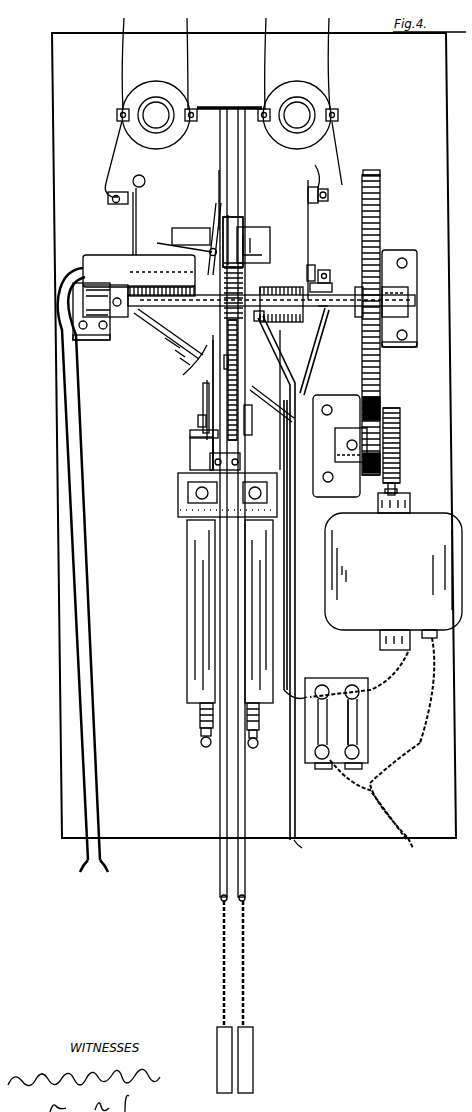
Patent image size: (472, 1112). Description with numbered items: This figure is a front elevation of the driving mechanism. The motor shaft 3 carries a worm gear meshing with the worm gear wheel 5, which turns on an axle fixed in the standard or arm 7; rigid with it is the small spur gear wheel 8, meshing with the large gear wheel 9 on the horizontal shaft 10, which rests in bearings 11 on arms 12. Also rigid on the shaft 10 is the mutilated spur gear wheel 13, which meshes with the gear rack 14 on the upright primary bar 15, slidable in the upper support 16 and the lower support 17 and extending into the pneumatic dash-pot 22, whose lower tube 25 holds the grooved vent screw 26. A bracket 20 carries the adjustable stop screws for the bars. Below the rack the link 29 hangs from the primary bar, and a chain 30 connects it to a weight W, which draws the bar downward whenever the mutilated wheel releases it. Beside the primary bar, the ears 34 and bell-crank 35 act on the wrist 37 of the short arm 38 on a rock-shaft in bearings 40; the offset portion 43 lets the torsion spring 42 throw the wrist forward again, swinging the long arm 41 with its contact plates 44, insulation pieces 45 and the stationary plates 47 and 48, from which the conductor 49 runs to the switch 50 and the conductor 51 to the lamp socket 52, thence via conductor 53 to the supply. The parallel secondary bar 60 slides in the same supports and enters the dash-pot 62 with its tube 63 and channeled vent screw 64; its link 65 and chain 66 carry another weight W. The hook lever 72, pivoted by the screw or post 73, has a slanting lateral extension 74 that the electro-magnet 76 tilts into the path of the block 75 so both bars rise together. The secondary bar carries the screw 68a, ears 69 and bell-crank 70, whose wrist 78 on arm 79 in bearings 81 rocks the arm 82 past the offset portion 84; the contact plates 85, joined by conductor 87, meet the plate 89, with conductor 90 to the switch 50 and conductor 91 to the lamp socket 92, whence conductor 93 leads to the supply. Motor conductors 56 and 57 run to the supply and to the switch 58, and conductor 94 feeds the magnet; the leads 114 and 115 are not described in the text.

The wire 114 is at (125, 60).
The wire 115 is at (188, 59).
The incandescent electric lamp socket 92 is at (163, 92).
The incandescent lamp socket 52 is at (302, 93).
The conductor 93 is at (221, 107).
The conductor 53 is at (241, 105).
The link 65 is at (219, 893).
The link 29 is at (246, 897).
The chain 66 is at (222, 960).
The chain 30 is at (245, 980).
The weight W is at (217, 1063).
The gear rack 14 is at (240, 372).
The offset portion 43 is at (238, 360).
The conductor 91 is at (105, 178).
The plate 89 is at (108, 205).
The contact plates 85 is at (145, 184).
The electric conductor 87 is at (132, 226).
The arm 82 is at (160, 222).
The electro-magnet 76 is at (97, 256).
The horizontal screw or post 73 is at (176, 244).
The hook lever 72 is at (212, 203).
The slanting lateral extension 74 is at (227, 210).
The block 75 is at (230, 222).
The primary bar 15 is at (243, 225).
The upper support 16 is at (248, 240).
The arm 41 is at (306, 247).
The metallic contact plates 44 is at (307, 195).
The stationary metallic contact plate or finger 47 is at (325, 270).
The insulated electric conductor 49 is at (333, 288).
The insulation pieces 45 is at (315, 167).
The conductor 51 is at (343, 157).
The plate 48 is at (345, 171).
The horizontal shaft 10 is at (336, 308).
The torsion spring 42 is at (270, 288).
The large gear wheel 9 is at (381, 389).
The worm gear wheel 5 is at (401, 459).
The shaft 3 is at (397, 491).
The small spur gear wheel 8 is at (377, 470).
The standard or arm 7 is at (345, 428).
The bearings 11 is at (73, 323).
The arms 12 is at (83, 343).
The conductor 94 is at (58, 303).
The bearings 81 is at (152, 328).
The conductor 90 is at (168, 343).
The arm 79 is at (175, 353).
The wrist 78 is at (180, 361).
The offset portion 84 is at (187, 364).
The mutilated spur gear wheel 13 is at (198, 365).
The bell-crank 70 is at (205, 395).
The ears 69 is at (203, 410).
The screw 68a is at (200, 421).
The secondary bar 60 is at (220, 433).
The bracket 20 is at (210, 449).
The lower support 17 is at (188, 493).
The dash-pot 62 is at (195, 603).
The tube 63 is at (200, 716).
The channeled vent screw 64 is at (200, 740).
The pneumatic dash-pot 22 is at (280, 690).
The tube 25 is at (253, 735).
The screw 26 is at (250, 750).
The wrist 37 is at (272, 343).
The short arm 38 is at (262, 319).
The bearings 40 is at (320, 308).
The bell-crank 35 is at (258, 392).
The ears 34 is at (251, 413).
The conductor 57 is at (396, 682).
The conductor 56 is at (421, 745).
The switch 50 is at (320, 683).
The switch 58 is at (356, 727).